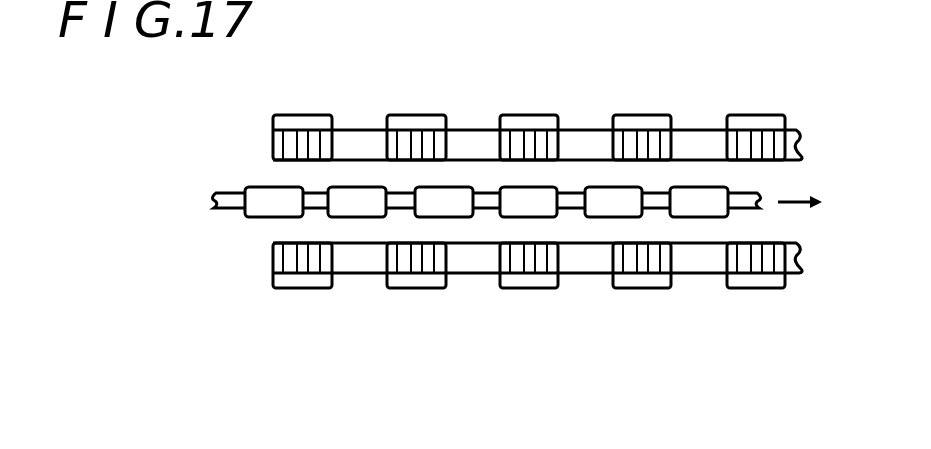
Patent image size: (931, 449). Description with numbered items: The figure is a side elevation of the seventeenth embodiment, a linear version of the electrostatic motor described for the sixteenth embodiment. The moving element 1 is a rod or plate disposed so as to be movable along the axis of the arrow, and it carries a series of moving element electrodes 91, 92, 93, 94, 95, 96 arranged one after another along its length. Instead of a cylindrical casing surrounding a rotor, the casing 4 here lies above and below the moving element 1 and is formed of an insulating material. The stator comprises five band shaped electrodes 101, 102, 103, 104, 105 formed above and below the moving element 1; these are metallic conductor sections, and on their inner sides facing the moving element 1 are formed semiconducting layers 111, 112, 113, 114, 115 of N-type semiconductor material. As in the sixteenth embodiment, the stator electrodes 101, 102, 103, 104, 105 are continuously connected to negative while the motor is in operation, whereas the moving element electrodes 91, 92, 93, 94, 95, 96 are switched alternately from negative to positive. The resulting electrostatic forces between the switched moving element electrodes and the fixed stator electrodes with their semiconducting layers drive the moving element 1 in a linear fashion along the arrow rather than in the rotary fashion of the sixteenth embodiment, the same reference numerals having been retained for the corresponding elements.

The moving element 1 is at (519, 291).
The casing 4 is at (805, 132).
The moving element electrode 91 is at (257, 205).
The moving element electrode 92 is at (353, 207).
The moving element electrode 93 is at (453, 210).
The moving element electrode 94 is at (540, 210).
The moving element electrode 95 is at (605, 212).
The moving element electrode 96 is at (702, 208).
The stator electrode 101 is at (281, 201).
The stator electrode 102 is at (394, 204).
The stator electrode 103 is at (508, 204).
The stator electrode 104 is at (621, 204).
The stator electrode 105 is at (736, 204).
The N-type semiconductor layer 111 is at (300, 140).
The N-type semiconductor layer 112 is at (413, 140).
The N-type semiconductor layer 113 is at (536, 140).
The N-type semiconductor layer 114 is at (650, 140).
The N-type semiconductor layer 115 is at (760, 140).